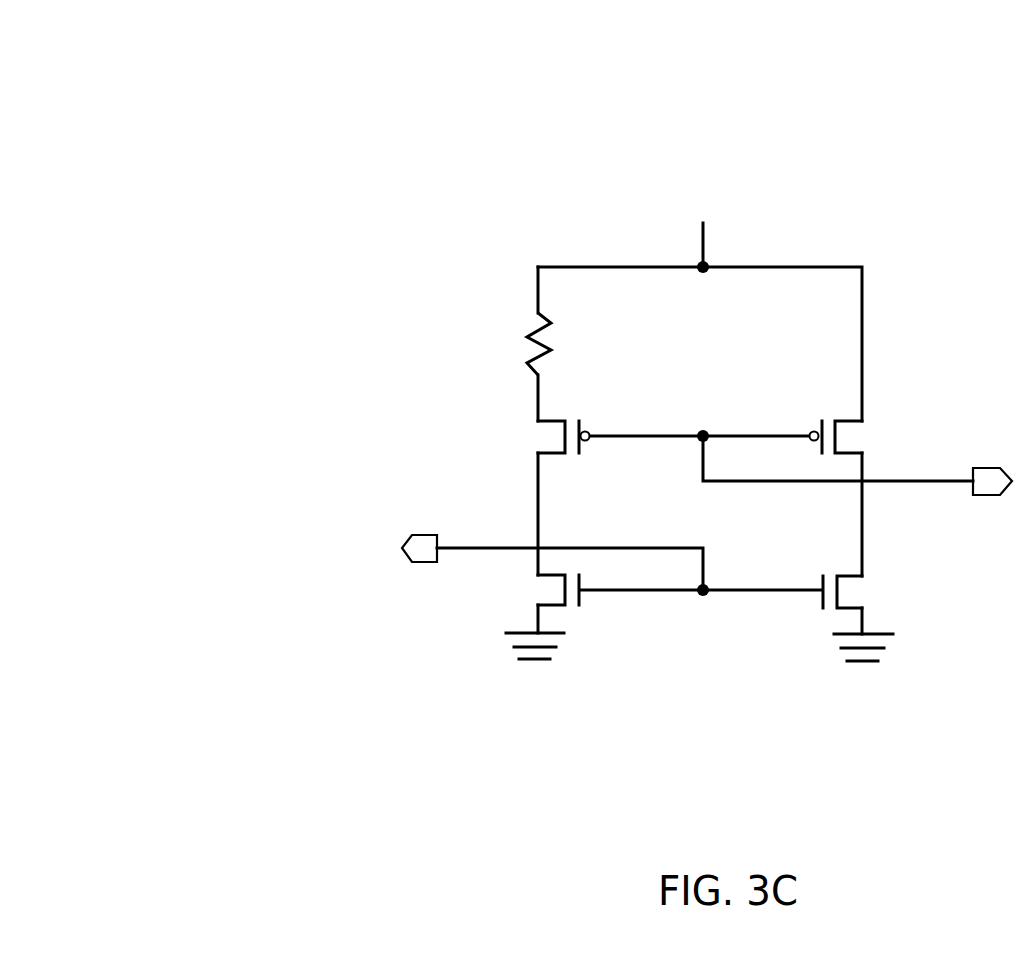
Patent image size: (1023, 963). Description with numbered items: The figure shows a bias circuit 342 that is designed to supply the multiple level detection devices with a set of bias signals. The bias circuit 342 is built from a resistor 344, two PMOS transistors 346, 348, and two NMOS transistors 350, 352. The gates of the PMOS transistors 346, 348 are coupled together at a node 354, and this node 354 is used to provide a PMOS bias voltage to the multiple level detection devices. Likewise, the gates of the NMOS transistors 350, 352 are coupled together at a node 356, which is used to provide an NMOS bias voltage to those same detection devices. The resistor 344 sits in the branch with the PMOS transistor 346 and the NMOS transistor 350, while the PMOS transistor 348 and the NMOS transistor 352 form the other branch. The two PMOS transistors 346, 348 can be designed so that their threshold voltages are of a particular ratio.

The bias circuit 342 is at (218, 95).
The resistor 344 is at (530, 337).
The PMOS transistor 346 is at (580, 422).
The PMOS transistor 348 is at (812, 428).
The NMOS transistor 350 is at (580, 600).
The NMOS transistor 352 is at (820, 580).
The node 354 is at (699, 440).
The node 356 is at (707, 595).